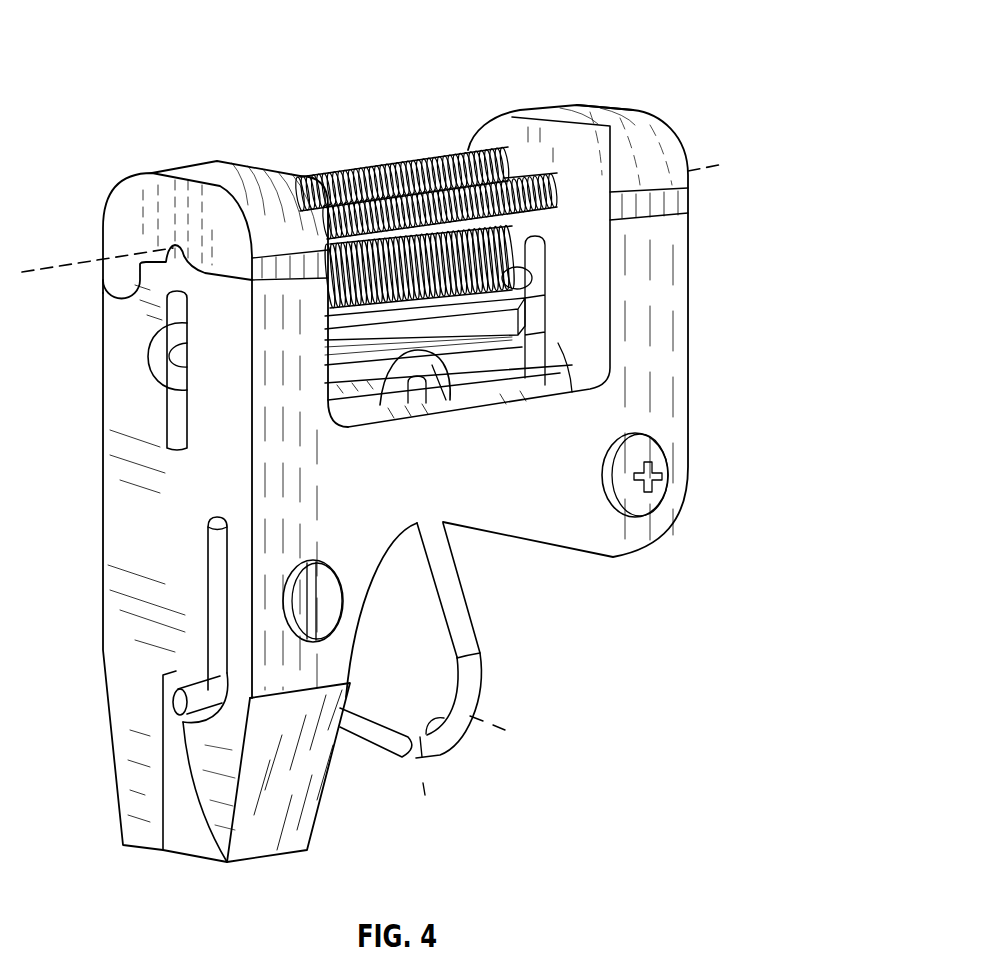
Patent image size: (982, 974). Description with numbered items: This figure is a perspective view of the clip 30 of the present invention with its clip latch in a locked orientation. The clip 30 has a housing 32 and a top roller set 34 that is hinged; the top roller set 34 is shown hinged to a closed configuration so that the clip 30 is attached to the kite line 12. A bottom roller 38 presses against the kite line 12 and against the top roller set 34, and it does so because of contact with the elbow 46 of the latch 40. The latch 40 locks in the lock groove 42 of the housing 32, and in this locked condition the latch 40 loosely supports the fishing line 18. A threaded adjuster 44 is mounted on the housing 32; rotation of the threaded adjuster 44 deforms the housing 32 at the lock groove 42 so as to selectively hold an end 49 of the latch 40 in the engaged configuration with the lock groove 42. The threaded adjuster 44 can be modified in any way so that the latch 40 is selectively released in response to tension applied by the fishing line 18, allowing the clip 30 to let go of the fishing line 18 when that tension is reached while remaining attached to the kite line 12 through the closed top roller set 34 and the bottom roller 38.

The kite line 12 is at (76, 264).
The fishing line 18 is at (508, 726).
The clip 30 is at (589, 44).
The housing 32 is at (118, 548).
The top roller set 34 is at (680, 144).
The bottom roller 38 is at (525, 228).
The latch 40 is at (437, 750).
The lock groove 42 is at (207, 723).
The threaded adjuster 44 is at (330, 602).
The elbow 46 is at (422, 363).
The end 49 is at (175, 698).